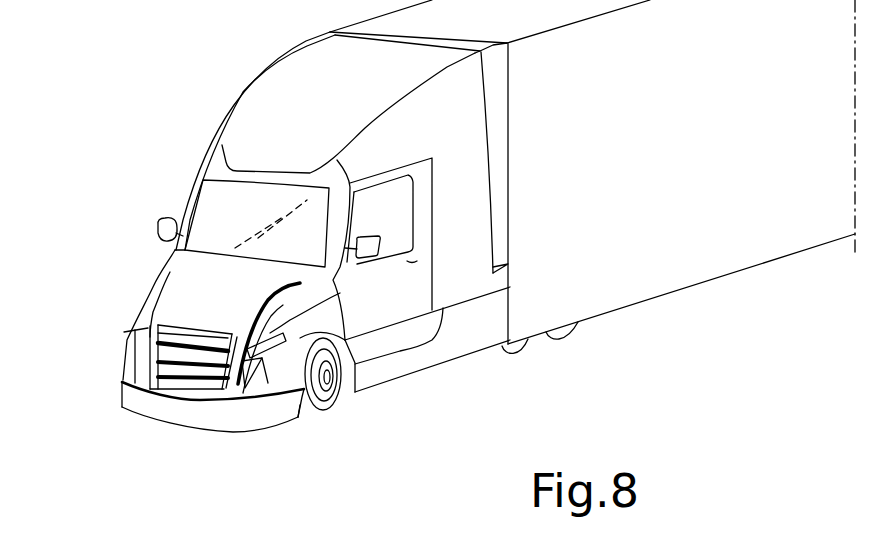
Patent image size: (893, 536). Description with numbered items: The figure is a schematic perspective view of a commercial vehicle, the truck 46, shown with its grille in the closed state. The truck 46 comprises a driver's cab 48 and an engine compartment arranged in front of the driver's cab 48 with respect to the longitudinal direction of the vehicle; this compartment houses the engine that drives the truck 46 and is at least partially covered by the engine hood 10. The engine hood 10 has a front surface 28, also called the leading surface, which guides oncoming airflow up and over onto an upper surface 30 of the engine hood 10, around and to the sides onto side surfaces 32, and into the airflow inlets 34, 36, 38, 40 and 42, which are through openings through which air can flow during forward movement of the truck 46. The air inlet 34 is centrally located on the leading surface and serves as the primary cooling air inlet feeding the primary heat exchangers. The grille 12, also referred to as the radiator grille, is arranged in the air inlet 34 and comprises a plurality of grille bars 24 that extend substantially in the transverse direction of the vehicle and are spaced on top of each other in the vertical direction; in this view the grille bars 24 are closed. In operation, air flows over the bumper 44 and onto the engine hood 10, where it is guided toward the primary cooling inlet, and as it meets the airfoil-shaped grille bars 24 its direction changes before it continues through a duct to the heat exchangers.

The engine hood 10 is at (149, 283).
The grille 12 is at (195, 384).
The grille bars 24 is at (140, 333).
The front surface 28 is at (264, 378).
The upper surface 30 is at (209, 281).
The side surfaces 32 is at (328, 394).
The air inlet 34 is at (172, 393).
The airflow inlet 36 is at (119, 375).
The airflow inlet 38 is at (242, 379).
The airflow inlet 40 is at (131, 313).
The airflow inlet 42 is at (275, 332).
The bumper 44 is at (296, 420).
The truck 46 is at (234, 103).
The driver's cab 48 is at (187, 185).